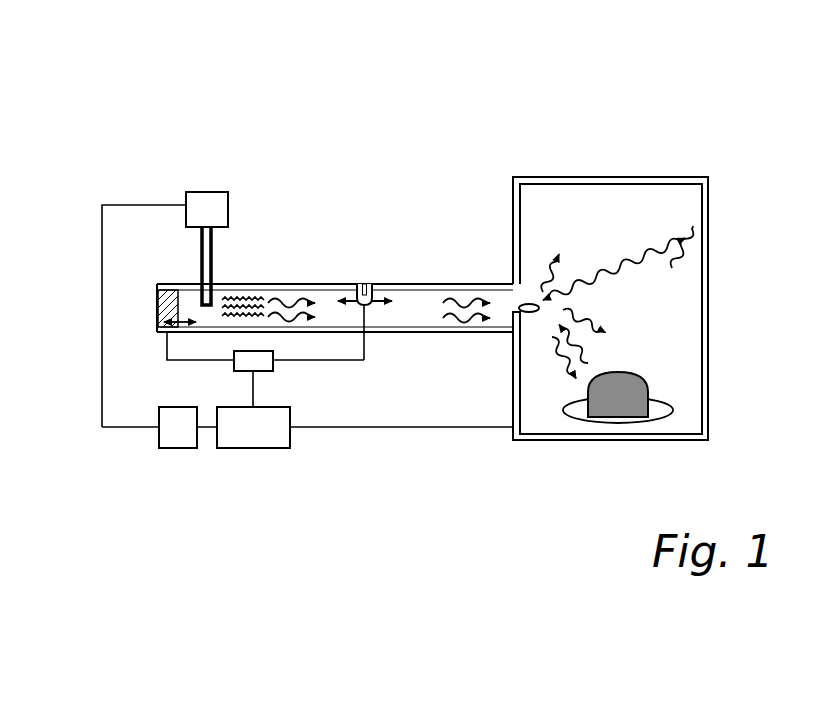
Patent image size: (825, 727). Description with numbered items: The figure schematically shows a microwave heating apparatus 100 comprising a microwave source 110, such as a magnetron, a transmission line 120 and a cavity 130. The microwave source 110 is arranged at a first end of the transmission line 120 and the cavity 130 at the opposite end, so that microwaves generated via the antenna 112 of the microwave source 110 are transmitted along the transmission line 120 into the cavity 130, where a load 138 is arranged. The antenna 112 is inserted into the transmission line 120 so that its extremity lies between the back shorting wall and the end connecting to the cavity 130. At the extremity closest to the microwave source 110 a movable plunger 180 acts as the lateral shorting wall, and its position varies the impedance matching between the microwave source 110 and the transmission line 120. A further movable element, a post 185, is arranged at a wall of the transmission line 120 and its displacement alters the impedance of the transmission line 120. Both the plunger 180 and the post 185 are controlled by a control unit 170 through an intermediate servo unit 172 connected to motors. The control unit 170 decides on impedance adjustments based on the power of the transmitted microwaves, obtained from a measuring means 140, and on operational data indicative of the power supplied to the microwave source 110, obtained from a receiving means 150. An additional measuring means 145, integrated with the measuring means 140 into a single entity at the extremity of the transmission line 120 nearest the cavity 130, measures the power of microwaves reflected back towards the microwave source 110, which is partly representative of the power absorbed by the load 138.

The microwave heating apparatus 100 is at (328, 117).
The microwave source 110 is at (203, 198).
The antenna 112 is at (208, 297).
The transmission line 120 is at (338, 284).
The cavity 130 is at (659, 221).
The load 138 is at (640, 388).
The measuring means 140 is at (458, 241).
The additional measuring means 145 is at (527, 303).
The receiving means 150 is at (175, 448).
The control unit 170 is at (255, 448).
The servo unit 172 is at (273, 362).
The plunger 180 is at (170, 293).
The post 185 is at (374, 288).